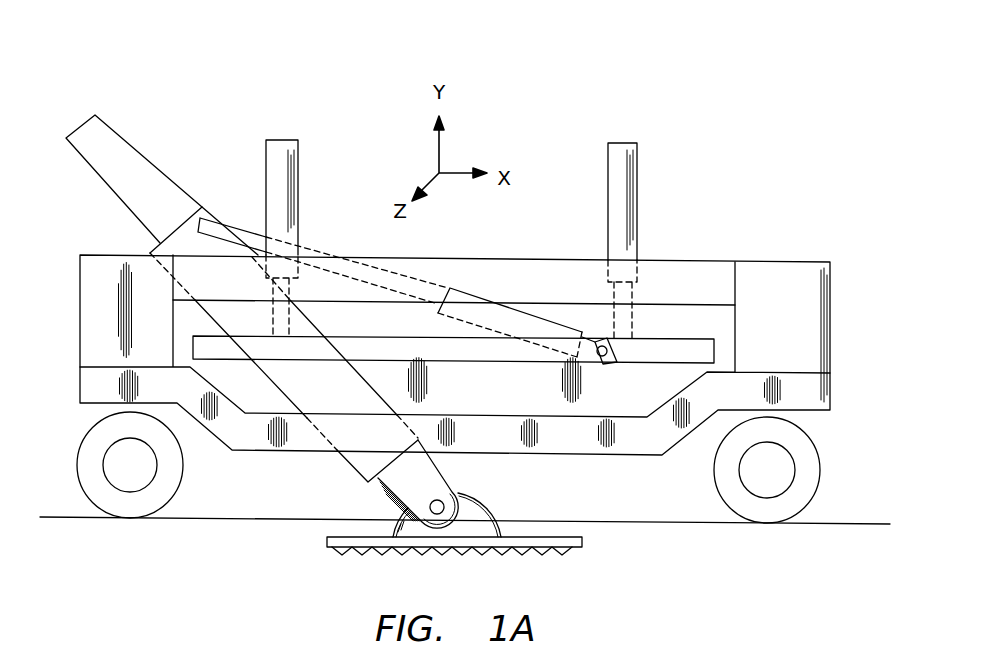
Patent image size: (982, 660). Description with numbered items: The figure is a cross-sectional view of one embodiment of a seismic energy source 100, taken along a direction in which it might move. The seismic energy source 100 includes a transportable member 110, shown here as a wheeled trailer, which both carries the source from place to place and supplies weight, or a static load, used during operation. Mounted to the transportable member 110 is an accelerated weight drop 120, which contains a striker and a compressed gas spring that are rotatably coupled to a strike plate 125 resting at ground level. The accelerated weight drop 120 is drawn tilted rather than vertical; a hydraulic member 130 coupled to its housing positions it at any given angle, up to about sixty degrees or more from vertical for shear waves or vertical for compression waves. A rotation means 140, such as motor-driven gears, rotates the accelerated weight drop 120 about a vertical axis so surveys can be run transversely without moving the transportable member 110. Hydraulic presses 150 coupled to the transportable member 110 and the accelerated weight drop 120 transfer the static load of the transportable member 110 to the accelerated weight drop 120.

The seismic energy source 100 is at (207, 82).
The transportable member 110 is at (788, 243).
The accelerated weight drop 120 is at (193, 165).
The strike plate 125 is at (583, 543).
The hydraulic member 130 is at (526, 323).
The rotation means 140 is at (728, 346).
The hydraulic presses 150 is at (283, 145).